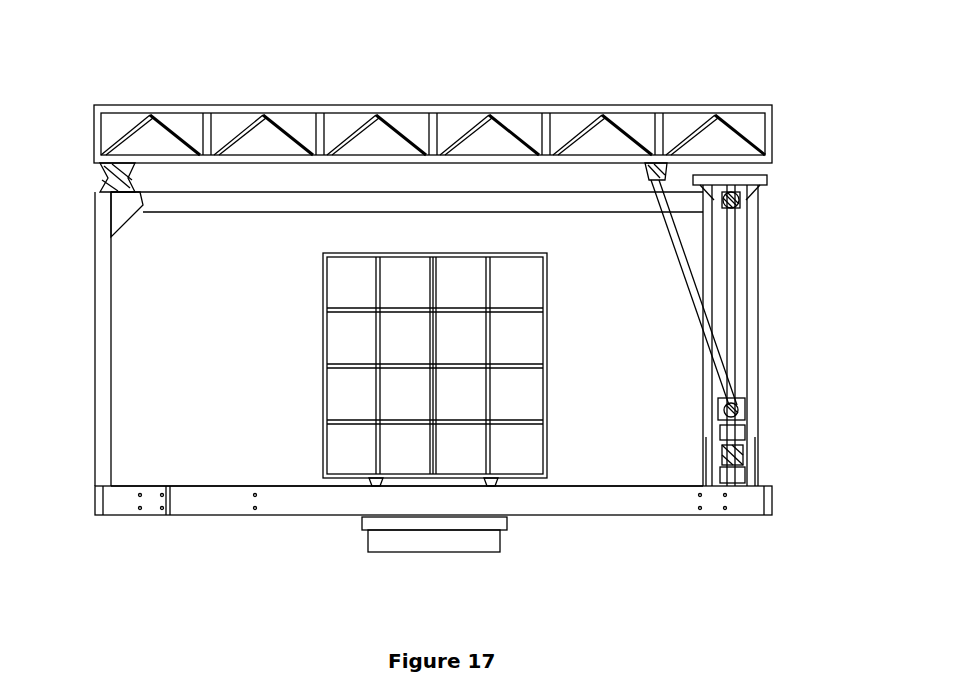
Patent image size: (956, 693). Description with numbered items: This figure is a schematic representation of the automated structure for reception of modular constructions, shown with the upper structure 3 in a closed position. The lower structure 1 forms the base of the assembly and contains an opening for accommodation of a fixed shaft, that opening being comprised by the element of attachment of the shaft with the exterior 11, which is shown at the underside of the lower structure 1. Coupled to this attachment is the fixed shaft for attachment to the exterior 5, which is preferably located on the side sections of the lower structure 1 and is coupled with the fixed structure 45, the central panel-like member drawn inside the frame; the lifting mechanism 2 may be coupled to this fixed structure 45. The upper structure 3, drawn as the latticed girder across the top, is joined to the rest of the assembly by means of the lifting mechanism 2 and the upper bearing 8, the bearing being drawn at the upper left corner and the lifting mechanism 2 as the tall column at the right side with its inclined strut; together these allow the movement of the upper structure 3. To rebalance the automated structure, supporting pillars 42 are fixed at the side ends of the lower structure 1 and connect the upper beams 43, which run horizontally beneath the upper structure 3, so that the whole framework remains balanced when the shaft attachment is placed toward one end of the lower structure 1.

The lower structure 1 is at (193, 500).
The lifting mechanism 2 is at (752, 315).
The upper structure 3 is at (320, 128).
The fixed shaft for attachment to the exterior 5 is at (487, 543).
The upper bearing 8 is at (104, 178).
The element of attachment of the shaft with the exterior 11 is at (414, 485).
The supporting pillars 42 is at (115, 290).
The upper beams 43 is at (586, 213).
The fixed structure 45 is at (437, 253).